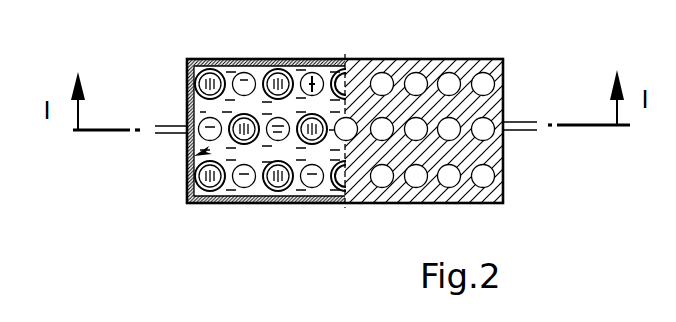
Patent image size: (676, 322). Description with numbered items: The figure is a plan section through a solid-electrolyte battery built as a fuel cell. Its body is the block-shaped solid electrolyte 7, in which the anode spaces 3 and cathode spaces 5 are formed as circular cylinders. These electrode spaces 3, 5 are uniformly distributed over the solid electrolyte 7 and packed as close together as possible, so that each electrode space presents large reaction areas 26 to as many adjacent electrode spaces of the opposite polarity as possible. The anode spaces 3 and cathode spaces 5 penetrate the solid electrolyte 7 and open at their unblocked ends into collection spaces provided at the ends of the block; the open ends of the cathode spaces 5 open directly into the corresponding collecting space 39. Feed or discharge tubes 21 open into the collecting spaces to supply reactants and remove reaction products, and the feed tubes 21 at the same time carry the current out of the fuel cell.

The anode space 3 is at (208, 68).
The cathode space 5 is at (242, 70).
The solid electrolyte 7 is at (462, 59).
The feed or discharge tube 21 is at (165, 124).
The reaction area 26 is at (312, 71).
The collecting space 39 is at (195, 153).